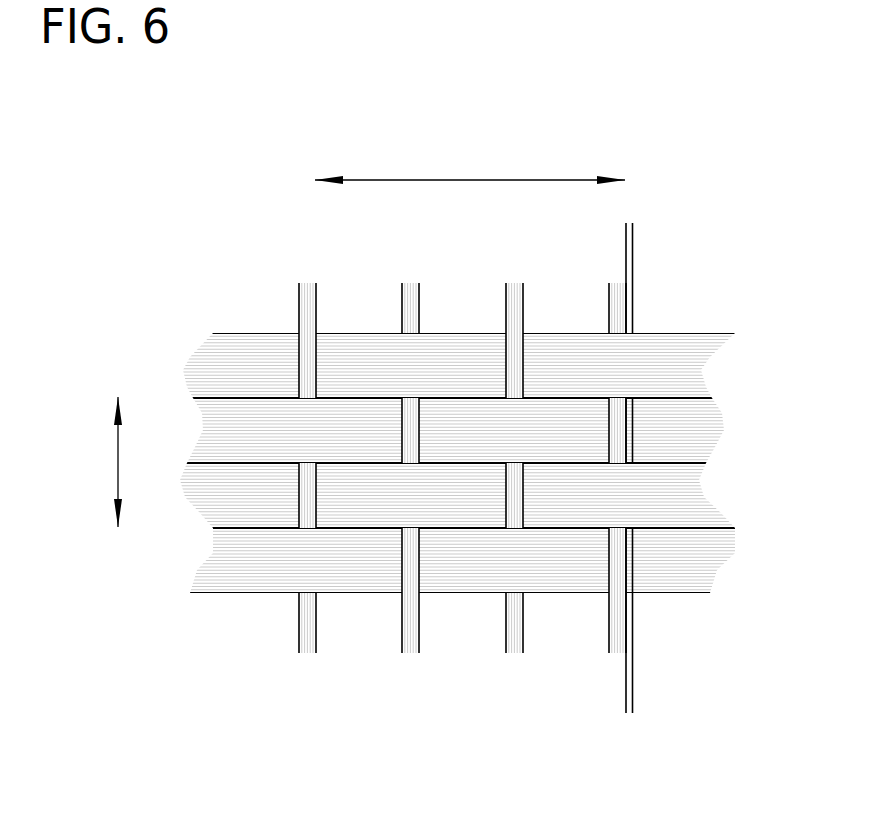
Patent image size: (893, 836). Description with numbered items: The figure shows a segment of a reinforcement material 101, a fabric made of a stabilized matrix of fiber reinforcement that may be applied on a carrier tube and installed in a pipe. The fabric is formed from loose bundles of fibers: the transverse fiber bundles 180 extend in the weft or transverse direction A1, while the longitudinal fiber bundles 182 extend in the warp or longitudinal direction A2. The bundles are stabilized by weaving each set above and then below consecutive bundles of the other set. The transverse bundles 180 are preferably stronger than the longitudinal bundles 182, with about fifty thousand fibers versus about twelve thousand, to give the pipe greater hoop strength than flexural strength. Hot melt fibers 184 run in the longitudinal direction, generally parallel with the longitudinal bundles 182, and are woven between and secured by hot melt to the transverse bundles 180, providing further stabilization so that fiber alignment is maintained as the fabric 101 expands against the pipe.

The reinforcement material 101 is at (120, 229).
The transverse fiber bundles 180 is at (627, 358).
The longitudinal fiber bundles 182 is at (298, 352).
The hot melt fibers 184 is at (632, 683).
The transverse direction A1 is at (472, 180).
The longitudinal direction A2 is at (118, 465).